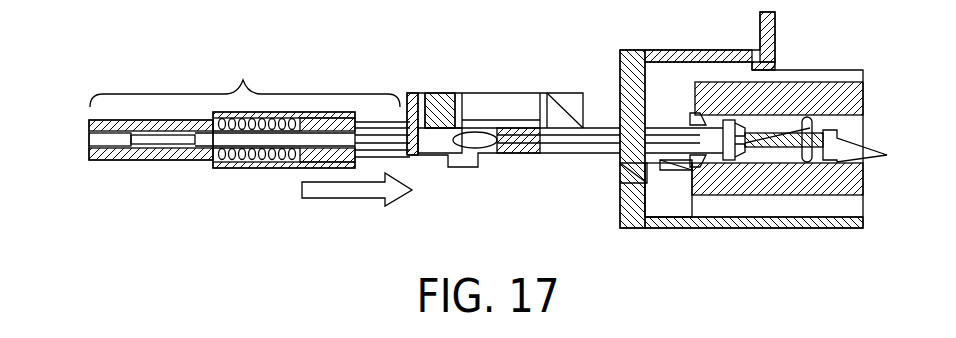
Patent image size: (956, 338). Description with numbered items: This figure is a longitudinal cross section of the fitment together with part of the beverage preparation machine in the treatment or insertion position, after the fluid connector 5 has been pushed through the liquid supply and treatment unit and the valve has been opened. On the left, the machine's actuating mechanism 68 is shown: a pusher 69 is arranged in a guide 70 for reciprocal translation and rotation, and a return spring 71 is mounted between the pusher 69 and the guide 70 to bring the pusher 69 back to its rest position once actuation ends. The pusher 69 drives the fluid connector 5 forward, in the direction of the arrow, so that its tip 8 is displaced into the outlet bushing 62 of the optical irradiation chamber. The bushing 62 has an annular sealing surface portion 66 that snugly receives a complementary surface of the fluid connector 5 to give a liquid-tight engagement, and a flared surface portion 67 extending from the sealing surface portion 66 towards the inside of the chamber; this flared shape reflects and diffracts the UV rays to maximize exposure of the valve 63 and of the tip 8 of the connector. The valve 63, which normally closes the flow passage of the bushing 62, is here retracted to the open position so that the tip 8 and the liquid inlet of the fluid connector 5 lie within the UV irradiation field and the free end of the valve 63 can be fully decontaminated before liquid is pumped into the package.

The fluid connector 5 is at (507, 138).
The tip 8 is at (720, 120).
The outlet bushing 62 is at (672, 168).
The valve 63 is at (752, 147).
The annular sealing surface portion 66 is at (702, 118).
The flared surface portion 67 is at (737, 130).
The actuating mechanism 68 is at (245, 82).
The pusher 69 is at (210, 143).
The guide 70 is at (247, 168).
The return spring 71 is at (155, 160).